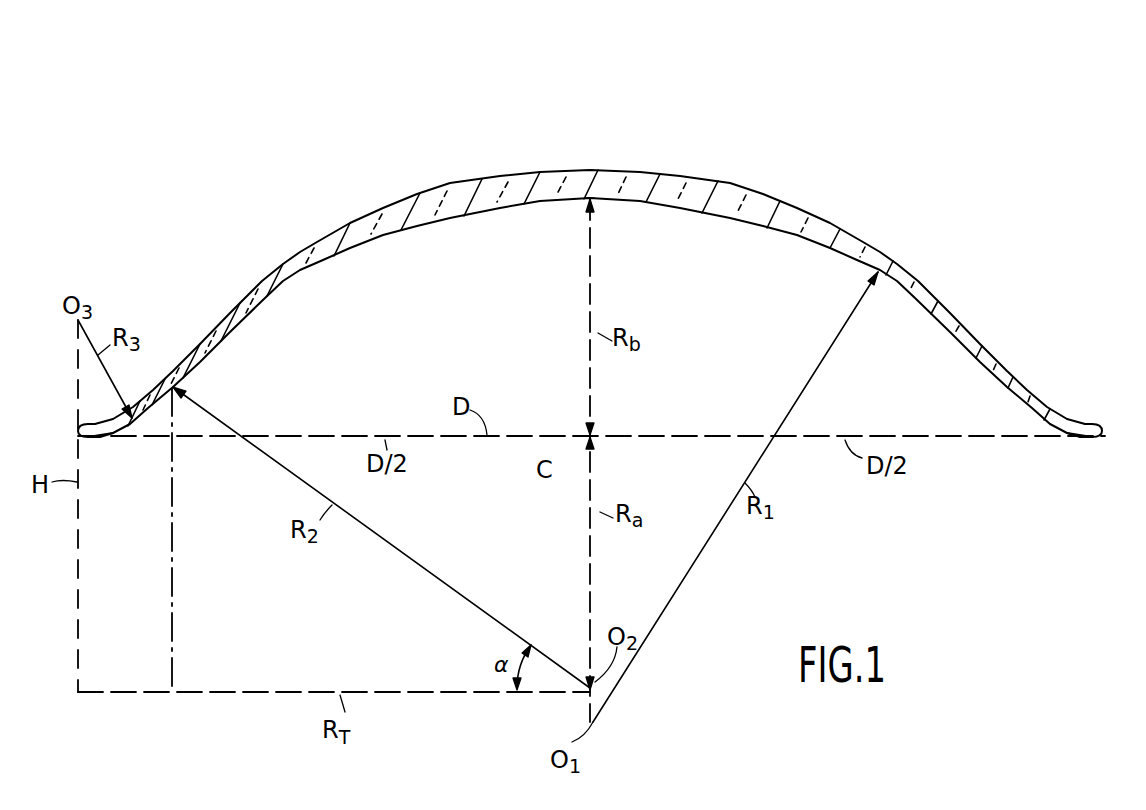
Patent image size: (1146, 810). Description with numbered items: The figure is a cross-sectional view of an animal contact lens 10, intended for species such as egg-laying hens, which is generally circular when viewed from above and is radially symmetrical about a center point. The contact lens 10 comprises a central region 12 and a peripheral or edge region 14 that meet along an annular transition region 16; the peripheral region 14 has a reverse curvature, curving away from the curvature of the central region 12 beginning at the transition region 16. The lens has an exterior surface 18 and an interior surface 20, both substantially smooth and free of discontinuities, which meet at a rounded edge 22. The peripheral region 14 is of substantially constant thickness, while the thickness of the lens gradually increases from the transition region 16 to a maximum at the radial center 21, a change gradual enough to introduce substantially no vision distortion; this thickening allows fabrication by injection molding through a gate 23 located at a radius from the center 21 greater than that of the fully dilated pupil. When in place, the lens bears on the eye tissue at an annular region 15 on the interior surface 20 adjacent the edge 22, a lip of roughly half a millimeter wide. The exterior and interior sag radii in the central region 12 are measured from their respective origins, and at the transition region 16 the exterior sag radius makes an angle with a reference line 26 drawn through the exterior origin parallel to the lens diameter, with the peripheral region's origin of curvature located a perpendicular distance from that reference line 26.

The contact lens 10 is at (625, 92).
The central region 12 is at (480, 150).
The peripheral region 14 is at (150, 340).
The annular region 15 is at (95, 440).
The transition region 16 is at (203, 390).
The exterior surface 18 is at (423, 192).
The interior surface 20 is at (432, 222).
The radial center 21 is at (590, 198).
The rounded edge 22 is at (75, 431).
The gate 23 is at (337, 262).
The reference line 26 is at (122, 694).